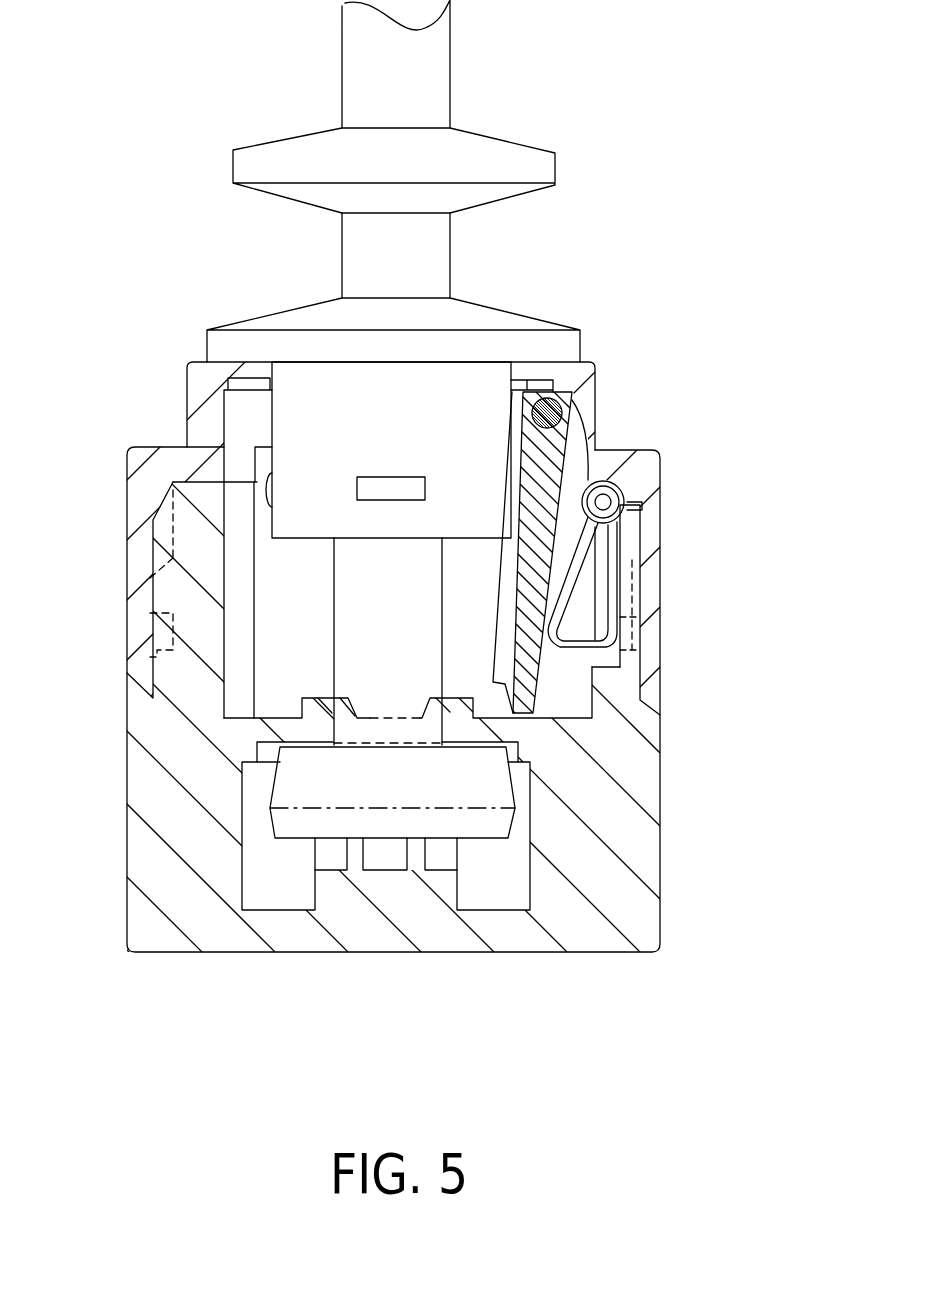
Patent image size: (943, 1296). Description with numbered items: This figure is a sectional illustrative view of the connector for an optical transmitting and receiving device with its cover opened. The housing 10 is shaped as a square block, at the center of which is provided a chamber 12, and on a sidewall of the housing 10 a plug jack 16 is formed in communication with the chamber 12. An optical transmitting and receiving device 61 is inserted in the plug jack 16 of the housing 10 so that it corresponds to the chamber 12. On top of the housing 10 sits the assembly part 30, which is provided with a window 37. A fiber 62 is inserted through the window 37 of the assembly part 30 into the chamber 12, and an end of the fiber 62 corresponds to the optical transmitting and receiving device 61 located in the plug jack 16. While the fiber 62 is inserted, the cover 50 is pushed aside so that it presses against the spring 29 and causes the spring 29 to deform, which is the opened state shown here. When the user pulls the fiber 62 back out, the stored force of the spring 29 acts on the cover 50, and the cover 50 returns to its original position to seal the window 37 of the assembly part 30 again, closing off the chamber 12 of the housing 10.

The housing 10 is at (664, 777).
The chamber 12 is at (288, 663).
The plug jack 16 is at (284, 856).
The spring 29 is at (615, 572).
The assembly part 30 is at (172, 415).
The window 37 is at (518, 388).
The cover 50 is at (565, 492).
The optical transmitting and receiving device 61 is at (430, 782).
The fiber 62 is at (477, 445).